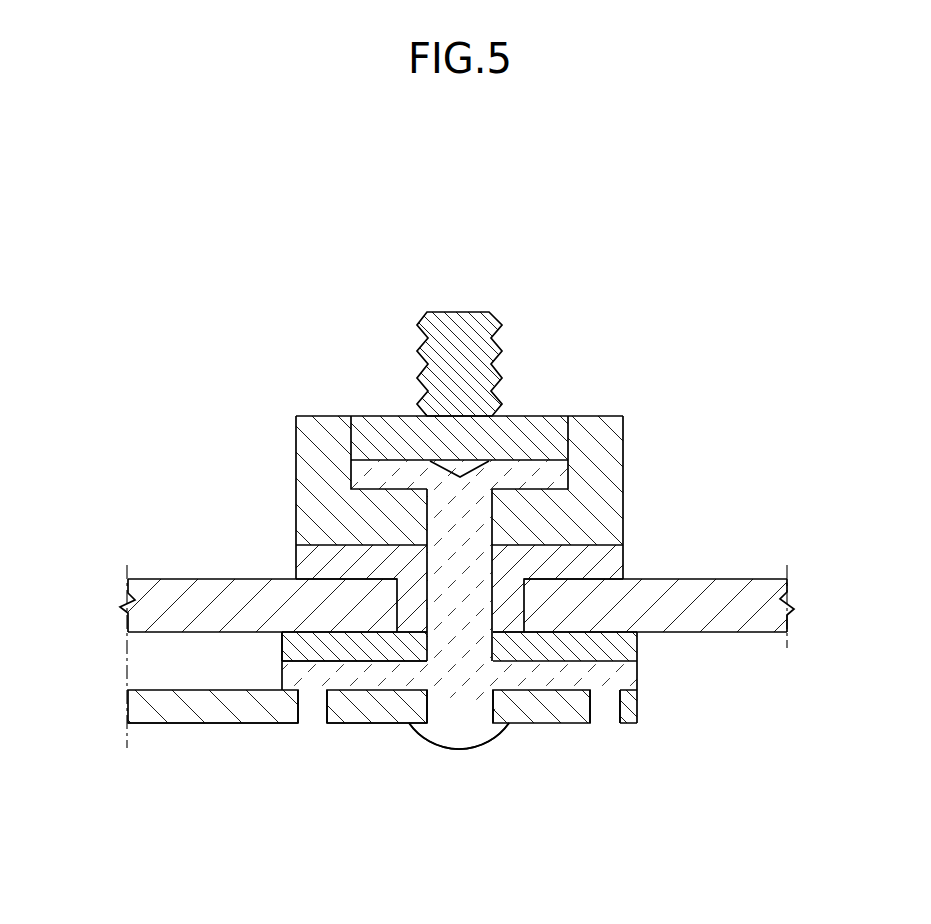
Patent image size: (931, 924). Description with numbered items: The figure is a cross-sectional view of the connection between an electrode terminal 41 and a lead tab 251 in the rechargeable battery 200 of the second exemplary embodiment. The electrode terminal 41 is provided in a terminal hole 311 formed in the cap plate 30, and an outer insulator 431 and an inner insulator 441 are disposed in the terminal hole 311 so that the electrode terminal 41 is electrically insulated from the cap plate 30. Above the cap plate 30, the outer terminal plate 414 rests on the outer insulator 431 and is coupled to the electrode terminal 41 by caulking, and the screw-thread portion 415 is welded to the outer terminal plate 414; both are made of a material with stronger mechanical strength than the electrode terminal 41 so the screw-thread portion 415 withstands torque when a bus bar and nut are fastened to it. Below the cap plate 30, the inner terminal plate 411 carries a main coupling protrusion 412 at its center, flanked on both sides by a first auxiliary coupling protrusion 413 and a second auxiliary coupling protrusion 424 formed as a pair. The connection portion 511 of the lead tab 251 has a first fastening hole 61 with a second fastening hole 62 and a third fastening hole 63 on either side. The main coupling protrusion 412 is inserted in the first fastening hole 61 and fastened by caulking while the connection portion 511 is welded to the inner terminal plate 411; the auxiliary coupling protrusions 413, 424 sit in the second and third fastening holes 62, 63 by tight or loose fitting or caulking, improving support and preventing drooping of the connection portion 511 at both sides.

The rechargeable battery 200 is at (390, 165).
The electrode terminal 41 is at (458, 588).
The inner terminal plate 411 is at (630, 670).
The main coupling protrusion 412 is at (457, 730).
The first auxiliary coupling protrusion 413 is at (320, 703).
The outer terminal plate 414 is at (312, 432).
The screw-thread portion 415 is at (457, 332).
The second auxiliary coupling protrusion 424 is at (597, 714).
The outer insulator 431 is at (607, 563).
The inner insulator 441 is at (293, 646).
The terminal hole 311 is at (403, 547).
The cap plate 30 is at (145, 595).
The connection portion 511 is at (385, 724).
The first fastening hole 61 is at (493, 700).
The second fastening hole 62 is at (303, 724).
The third fastening hole 63 is at (615, 723).
The lead tab 251 is at (165, 727).